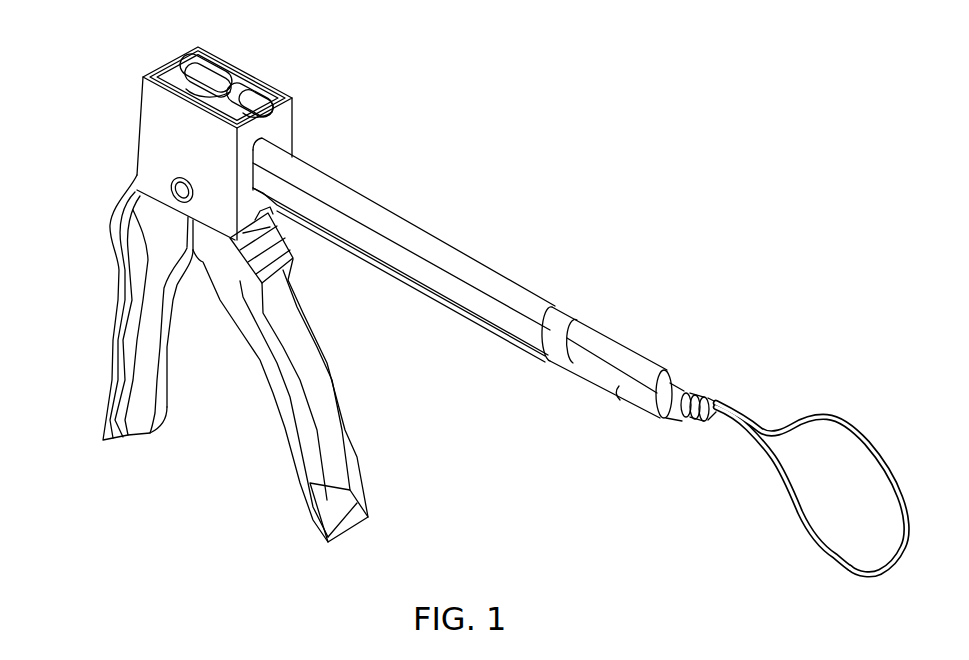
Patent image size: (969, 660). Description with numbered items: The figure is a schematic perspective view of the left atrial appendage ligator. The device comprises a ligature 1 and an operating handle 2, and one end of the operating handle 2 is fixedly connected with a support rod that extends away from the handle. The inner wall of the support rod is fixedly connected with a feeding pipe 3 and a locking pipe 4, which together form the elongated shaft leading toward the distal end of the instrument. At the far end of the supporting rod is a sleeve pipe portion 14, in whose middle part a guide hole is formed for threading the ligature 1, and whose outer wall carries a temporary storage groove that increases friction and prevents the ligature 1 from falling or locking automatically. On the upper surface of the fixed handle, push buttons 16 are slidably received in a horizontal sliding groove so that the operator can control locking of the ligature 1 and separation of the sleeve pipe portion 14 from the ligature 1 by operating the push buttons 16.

The ligature 1 is at (734, 411).
The operating handle 2 is at (136, 305).
The feeding pipe 3 is at (596, 375).
The locking pipe 4 is at (610, 350).
The sleeve pipe portion 14 is at (680, 399).
The push button 16 is at (218, 71).